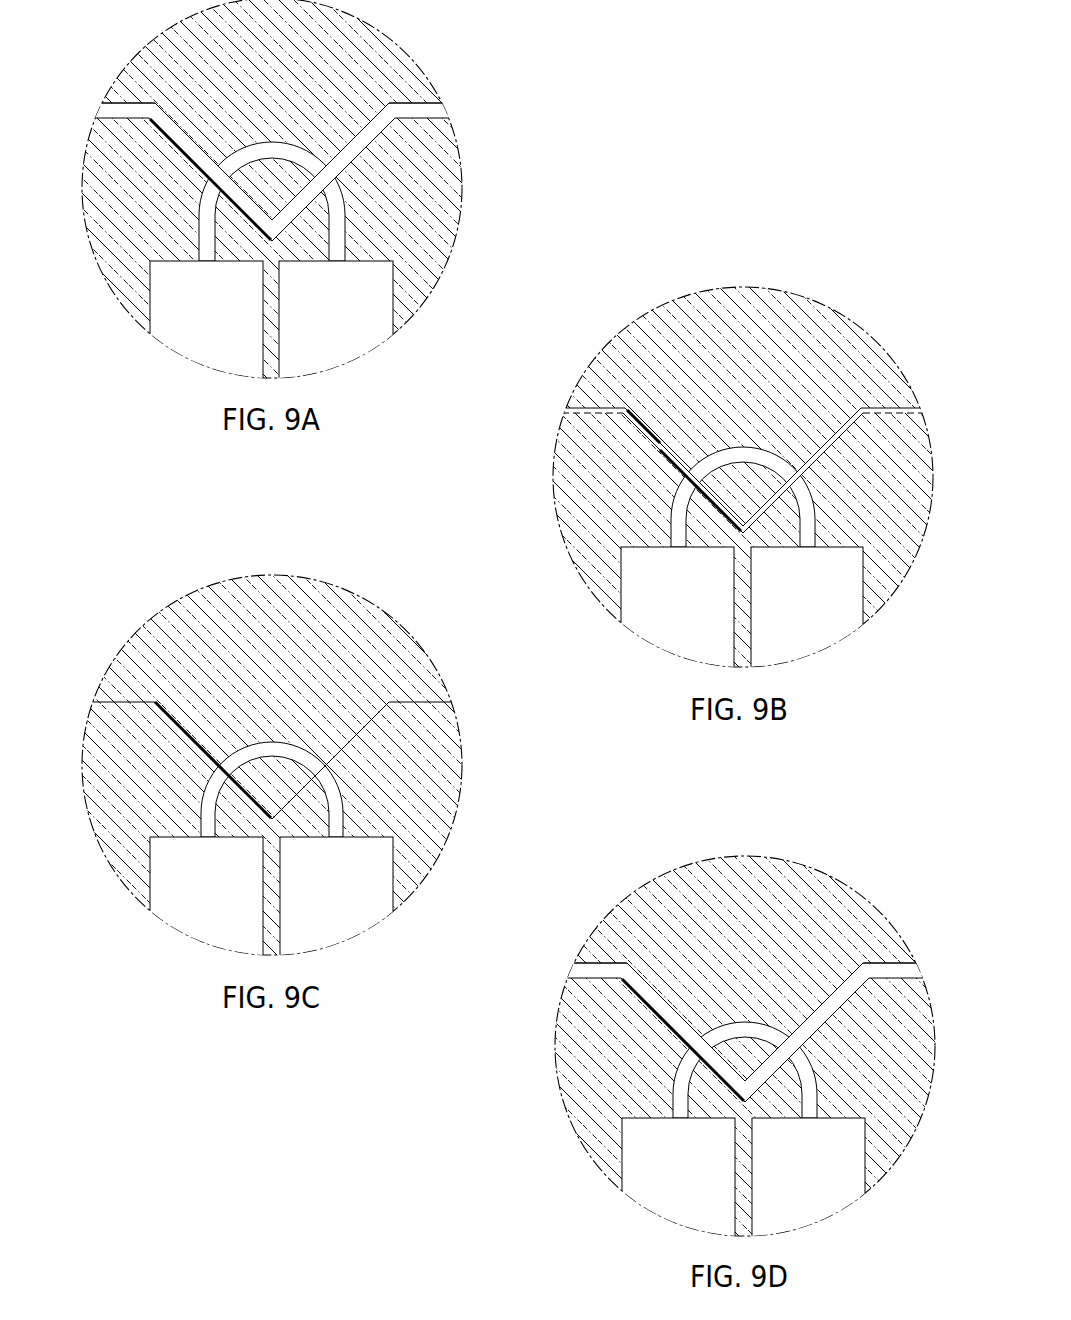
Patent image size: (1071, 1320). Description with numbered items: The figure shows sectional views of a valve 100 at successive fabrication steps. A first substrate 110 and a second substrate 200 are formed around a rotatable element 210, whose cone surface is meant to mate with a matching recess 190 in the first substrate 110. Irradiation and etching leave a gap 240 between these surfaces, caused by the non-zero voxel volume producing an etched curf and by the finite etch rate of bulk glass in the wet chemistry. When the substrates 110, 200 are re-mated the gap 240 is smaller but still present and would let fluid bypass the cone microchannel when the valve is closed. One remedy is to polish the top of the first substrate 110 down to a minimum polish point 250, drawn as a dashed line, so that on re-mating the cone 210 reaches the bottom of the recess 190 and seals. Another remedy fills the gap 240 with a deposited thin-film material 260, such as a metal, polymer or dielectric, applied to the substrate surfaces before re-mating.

In FIG. 9A, the connection arrangement 100 is at (110, 56).
In FIG. 9B, the connection arrangement 100 is at (743, 450).
In FIG. 9C, the connection arrangement 100 is at (249, 762).
In FIG. 9D, the connection arrangement 100 is at (745, 1021).
In FIG. 9A, the first substrate 110 is at (462, 223).
In FIG. 9B, the first substrate 110 is at (585, 584).
In FIG. 9C, the first substrate 110 is at (92, 828).
In FIG. 9D, the first substrate 110 is at (563, 1112).
In FIG. 9A, the recess 190 is at (336, 183).
In FIG. 9B, the recess 190 is at (673, 460).
In FIG. 9C, the recess 190 is at (205, 753).
In FIG. 9D, the recess 190 is at (685, 1045).
In FIG. 9A, the second substrate 200 is at (400, 49).
In FIG. 9B, the second substrate 200 is at (744, 478).
In FIG. 9C, the second substrate 200 is at (273, 766).
In FIG. 9D, the second substrate 200 is at (618, 908).
In FIG. 9A, the rotatable element 210 is at (348, 147).
In FIG. 9B, the rotatable element 210 is at (658, 438).
In FIG. 9C, the rotatable element 210 is at (203, 717).
In FIG. 9D, the rotatable element 210 is at (668, 1005).
In FIG. 9A, the gap 240 is at (430, 109).
In FIG. 9B, the gap 240 is at (645, 428).
In FIG. 9B, the minimum polish point 250 is at (567, 413).
In FIG. 9D, the thin-film material 260 is at (587, 968).